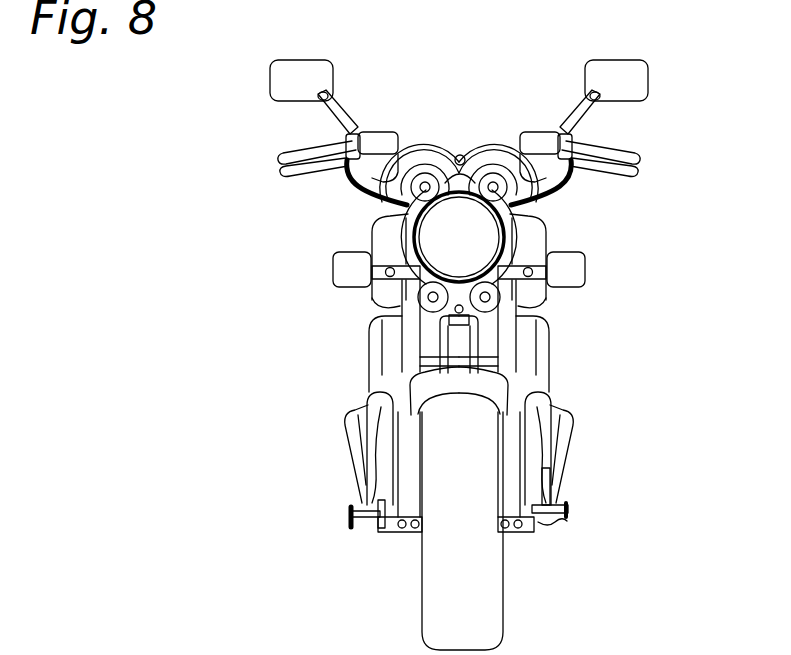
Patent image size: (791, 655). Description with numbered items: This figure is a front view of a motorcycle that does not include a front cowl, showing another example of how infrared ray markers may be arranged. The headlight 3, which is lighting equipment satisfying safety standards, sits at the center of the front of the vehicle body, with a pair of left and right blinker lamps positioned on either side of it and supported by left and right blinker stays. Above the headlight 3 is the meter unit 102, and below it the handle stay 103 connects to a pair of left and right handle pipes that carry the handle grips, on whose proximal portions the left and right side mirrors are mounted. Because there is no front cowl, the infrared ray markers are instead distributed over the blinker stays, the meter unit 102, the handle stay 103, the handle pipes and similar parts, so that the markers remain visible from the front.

The meter unit 102 is at (462, 154).
The headlight 3 is at (483, 237).
The handle stay 103 is at (463, 320).